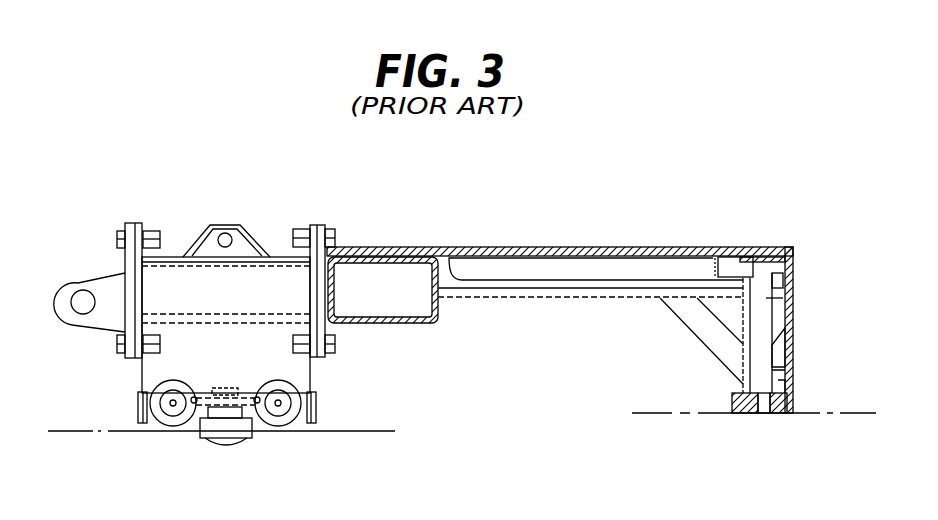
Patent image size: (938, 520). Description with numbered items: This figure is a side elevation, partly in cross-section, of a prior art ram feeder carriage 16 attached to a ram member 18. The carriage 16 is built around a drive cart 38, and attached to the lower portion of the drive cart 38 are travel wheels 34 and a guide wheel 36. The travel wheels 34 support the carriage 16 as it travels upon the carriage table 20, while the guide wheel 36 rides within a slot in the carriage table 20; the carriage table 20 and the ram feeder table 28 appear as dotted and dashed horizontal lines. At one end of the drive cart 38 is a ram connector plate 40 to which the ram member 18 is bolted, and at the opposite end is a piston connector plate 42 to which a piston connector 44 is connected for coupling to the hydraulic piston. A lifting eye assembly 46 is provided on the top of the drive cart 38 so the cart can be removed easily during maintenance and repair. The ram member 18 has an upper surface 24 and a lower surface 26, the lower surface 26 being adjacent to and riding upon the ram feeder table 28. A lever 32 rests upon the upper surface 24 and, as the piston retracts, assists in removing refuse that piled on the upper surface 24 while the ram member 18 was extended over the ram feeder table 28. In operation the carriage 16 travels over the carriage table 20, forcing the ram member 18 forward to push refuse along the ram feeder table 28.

The ram feeder carriage 16 is at (214, 204).
The ram member 18 is at (580, 236).
The carriage table 20 is at (398, 436).
The upper surface 24 is at (638, 247).
The lower surface 26 is at (777, 414).
The ram feeder table 28 is at (812, 412).
The lever 32 is at (795, 318).
The travel wheels 34 is at (163, 432).
The guide wheel 36 is at (240, 437).
The drive cart 38 is at (270, 276).
The ram connector plate 40 is at (320, 224).
The piston connector plate 42 is at (129, 222).
The piston connector 44 is at (73, 280).
The lifting eye assembly 46 is at (267, 253).